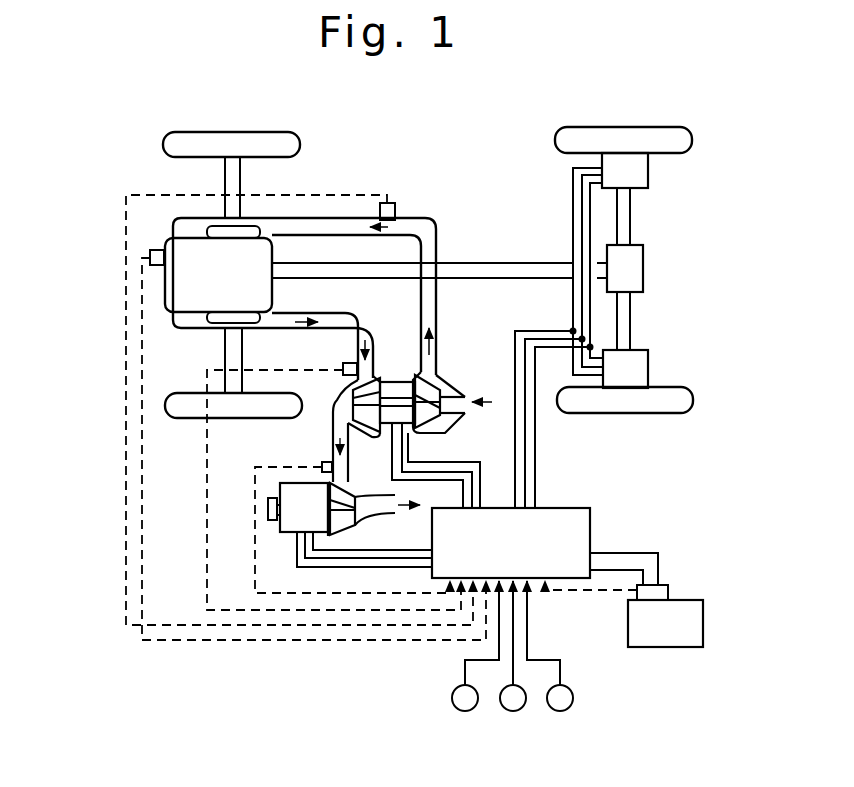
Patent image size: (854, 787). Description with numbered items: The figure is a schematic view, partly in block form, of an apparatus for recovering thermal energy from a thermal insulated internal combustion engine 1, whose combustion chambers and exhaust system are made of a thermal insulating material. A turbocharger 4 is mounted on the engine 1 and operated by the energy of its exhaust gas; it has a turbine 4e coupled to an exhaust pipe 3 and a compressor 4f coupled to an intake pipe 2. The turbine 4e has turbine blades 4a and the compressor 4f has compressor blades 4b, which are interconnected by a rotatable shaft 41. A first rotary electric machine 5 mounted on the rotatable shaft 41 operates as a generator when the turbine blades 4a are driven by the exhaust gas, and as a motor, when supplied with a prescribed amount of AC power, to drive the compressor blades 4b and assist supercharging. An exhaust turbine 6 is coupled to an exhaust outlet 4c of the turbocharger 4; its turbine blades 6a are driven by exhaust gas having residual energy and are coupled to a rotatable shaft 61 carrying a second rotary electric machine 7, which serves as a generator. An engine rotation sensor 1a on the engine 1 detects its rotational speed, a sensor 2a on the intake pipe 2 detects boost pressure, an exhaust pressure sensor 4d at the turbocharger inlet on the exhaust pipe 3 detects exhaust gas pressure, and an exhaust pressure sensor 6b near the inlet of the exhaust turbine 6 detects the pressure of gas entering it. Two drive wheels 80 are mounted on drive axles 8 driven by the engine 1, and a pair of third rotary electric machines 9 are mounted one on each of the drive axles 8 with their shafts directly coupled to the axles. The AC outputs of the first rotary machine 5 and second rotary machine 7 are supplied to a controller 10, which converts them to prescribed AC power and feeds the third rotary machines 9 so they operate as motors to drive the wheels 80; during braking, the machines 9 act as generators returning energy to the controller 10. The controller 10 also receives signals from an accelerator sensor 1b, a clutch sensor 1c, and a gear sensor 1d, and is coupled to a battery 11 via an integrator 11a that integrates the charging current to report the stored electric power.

The thermal insulated internal combustion engine 1 is at (173, 297).
The engine rotation sensor 1a is at (150, 256).
The accelerator sensor 1b is at (462, 703).
The clutch sensor 1c is at (510, 703).
The gear sensor 1d is at (560, 703).
The intake pipe 2 is at (312, 228).
The sensor 2a is at (396, 208).
The exhaust pipe 3 is at (342, 323).
The turbocharger 4 is at (441, 370).
The turbine blades 4a is at (340, 415).
The compressor blades 4b is at (432, 392).
The exhaust outlet 4c is at (340, 396).
The exhaust pressure sensor 4d is at (345, 366).
The turbine 4e is at (360, 431).
The compressor 4f is at (444, 430).
The rotatable shaft 41 is at (408, 437).
The first rotary electric machine 5 is at (396, 392).
The exhaust turbine 6 is at (291, 539).
The turbine blades 6a is at (345, 500).
The exhaust pressure sensor 6b is at (322, 465).
The rotatable shaft 61 is at (268, 508).
The second rotary electric machine 7 is at (282, 525).
The drive axles 8 is at (628, 225).
The third rotary electric machines 9 is at (642, 180).
The controller 10 is at (583, 505).
The battery 11 is at (688, 607).
The integrator 11a is at (666, 588).
The drive wheels 80 is at (680, 133).